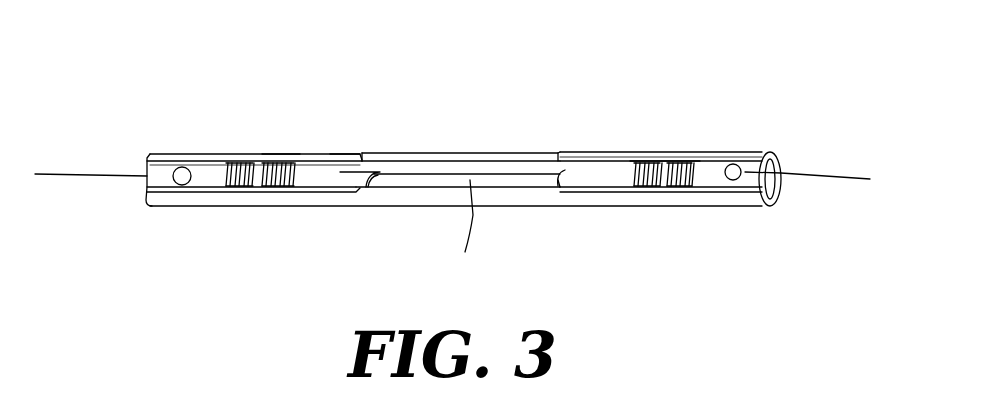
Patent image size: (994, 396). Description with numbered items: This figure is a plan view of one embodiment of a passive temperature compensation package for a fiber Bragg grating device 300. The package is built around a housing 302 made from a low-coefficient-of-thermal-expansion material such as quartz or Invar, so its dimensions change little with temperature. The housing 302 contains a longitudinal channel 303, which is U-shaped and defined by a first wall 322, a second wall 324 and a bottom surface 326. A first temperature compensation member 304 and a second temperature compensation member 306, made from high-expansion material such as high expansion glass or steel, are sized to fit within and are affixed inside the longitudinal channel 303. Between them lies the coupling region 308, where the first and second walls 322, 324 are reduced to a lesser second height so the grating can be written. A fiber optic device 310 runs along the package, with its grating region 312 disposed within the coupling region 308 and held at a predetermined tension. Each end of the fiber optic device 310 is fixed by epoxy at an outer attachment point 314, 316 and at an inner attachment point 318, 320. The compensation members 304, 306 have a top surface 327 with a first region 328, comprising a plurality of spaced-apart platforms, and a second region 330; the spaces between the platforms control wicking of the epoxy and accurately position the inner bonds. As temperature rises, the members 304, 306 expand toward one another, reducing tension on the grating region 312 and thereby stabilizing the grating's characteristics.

The fiber Bragg grating device 300 is at (716, 68).
The housing 302 is at (748, 198).
The longitudinal channel 303 is at (575, 158).
The first temperature compensation member 304 is at (147, 178).
The second temperature compensation member 306 is at (708, 158).
The coupling region 308 is at (415, 171).
The fiber optic device 310 is at (330, 163).
The grating region 312 is at (438, 175).
The outer attachment point 314 is at (182, 176).
The outer attachment point 316 is at (731, 180).
The inner attachment point 318 is at (257, 172).
The inner attachment point 320 is at (658, 158).
The first wall 322 is at (323, 190).
The second wall 324 is at (283, 155).
The bottom surface 326 is at (781, 190).
The top surface 327 is at (773, 160).
The first region 328 is at (652, 187).
The second region 330 is at (707, 187).